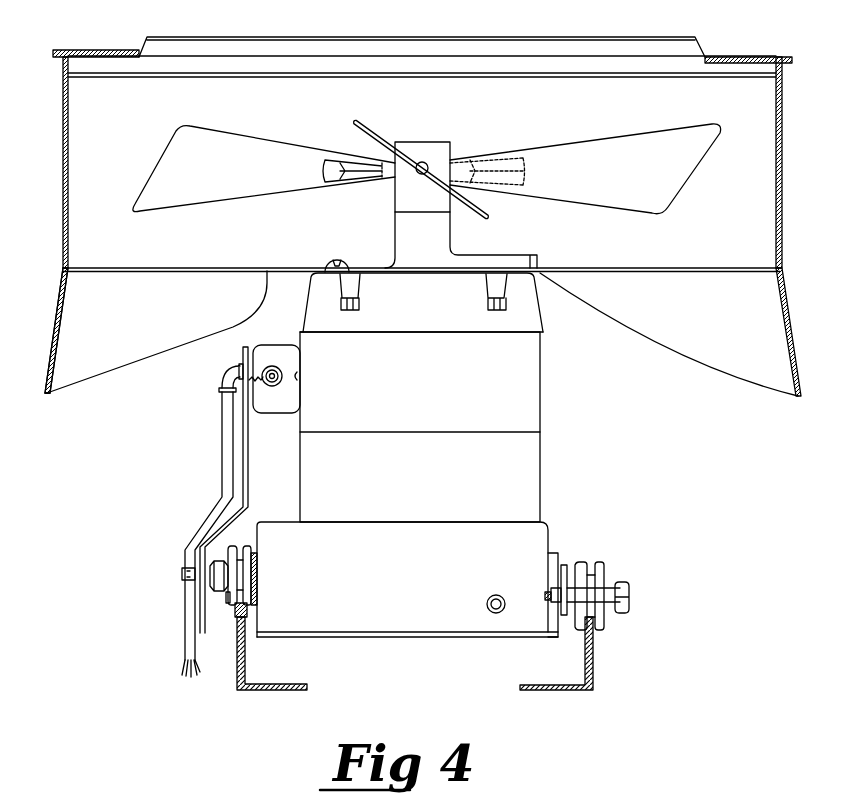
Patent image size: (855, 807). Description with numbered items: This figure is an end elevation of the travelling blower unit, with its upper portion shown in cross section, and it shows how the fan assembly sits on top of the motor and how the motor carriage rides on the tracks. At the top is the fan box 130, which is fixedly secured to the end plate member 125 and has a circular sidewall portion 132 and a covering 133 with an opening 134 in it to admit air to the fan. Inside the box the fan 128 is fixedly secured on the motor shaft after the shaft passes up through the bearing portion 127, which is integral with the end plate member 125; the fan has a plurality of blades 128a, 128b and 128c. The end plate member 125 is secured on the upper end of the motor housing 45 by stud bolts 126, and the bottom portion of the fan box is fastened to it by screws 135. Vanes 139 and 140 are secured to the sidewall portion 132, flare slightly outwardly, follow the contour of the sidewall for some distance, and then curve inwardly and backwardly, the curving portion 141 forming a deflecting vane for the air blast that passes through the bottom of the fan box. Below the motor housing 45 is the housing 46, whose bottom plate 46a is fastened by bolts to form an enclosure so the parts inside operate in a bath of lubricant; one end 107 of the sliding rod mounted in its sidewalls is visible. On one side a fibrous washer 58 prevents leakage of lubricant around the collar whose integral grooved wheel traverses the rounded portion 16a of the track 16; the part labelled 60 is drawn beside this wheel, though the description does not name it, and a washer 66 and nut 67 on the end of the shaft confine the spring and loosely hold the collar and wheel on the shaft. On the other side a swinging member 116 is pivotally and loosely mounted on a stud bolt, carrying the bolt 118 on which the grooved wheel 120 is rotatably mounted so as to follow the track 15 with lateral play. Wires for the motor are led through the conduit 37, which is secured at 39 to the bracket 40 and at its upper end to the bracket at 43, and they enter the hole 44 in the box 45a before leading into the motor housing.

The angular track member 15 is at (547, 667).
The angular track member 16 is at (243, 677).
The rounded portion of track 16a is at (238, 618).
The conduit 37 is at (222, 431).
The securing point 39 is at (182, 575).
The bracket 40 is at (250, 452).
The upper conduit securing point 43 is at (241, 366).
The hole 44 is at (273, 390).
The motor housing 45 is at (544, 449).
The box 45a is at (279, 336).
The housing 46 is at (549, 534).
The bottom plate 46a is at (352, 640).
The fibrous washer 58 is at (258, 589).
The grommet 60 is at (254, 531).
The washer 66 is at (226, 600).
The nut 67 is at (224, 556).
The end of sliding rod 107 is at (488, 608).
The swinging member 116 is at (566, 566).
The bolt 118 is at (627, 605).
The grooved wheel 120 is at (601, 576).
The end plate member of motor housing 125 is at (543, 324).
The stud bolt 126 is at (350, 309).
The bearing portion 127 is at (440, 243).
The fan 128 is at (458, 126).
The fan blade 128a is at (487, 220).
The fan blade 128b is at (703, 163).
The fan blade 128c is at (172, 200).
The fan box 130 is at (59, 226).
The circular sidewall portion 132 is at (775, 216).
The covering 133 is at (782, 34).
The opening 134 is at (592, 50).
The screw 135 is at (357, 243).
The vane 139 is at (44, 394).
The vane 140 is at (788, 393).
The inwardly and backwardly curving portion 141 is at (168, 344).